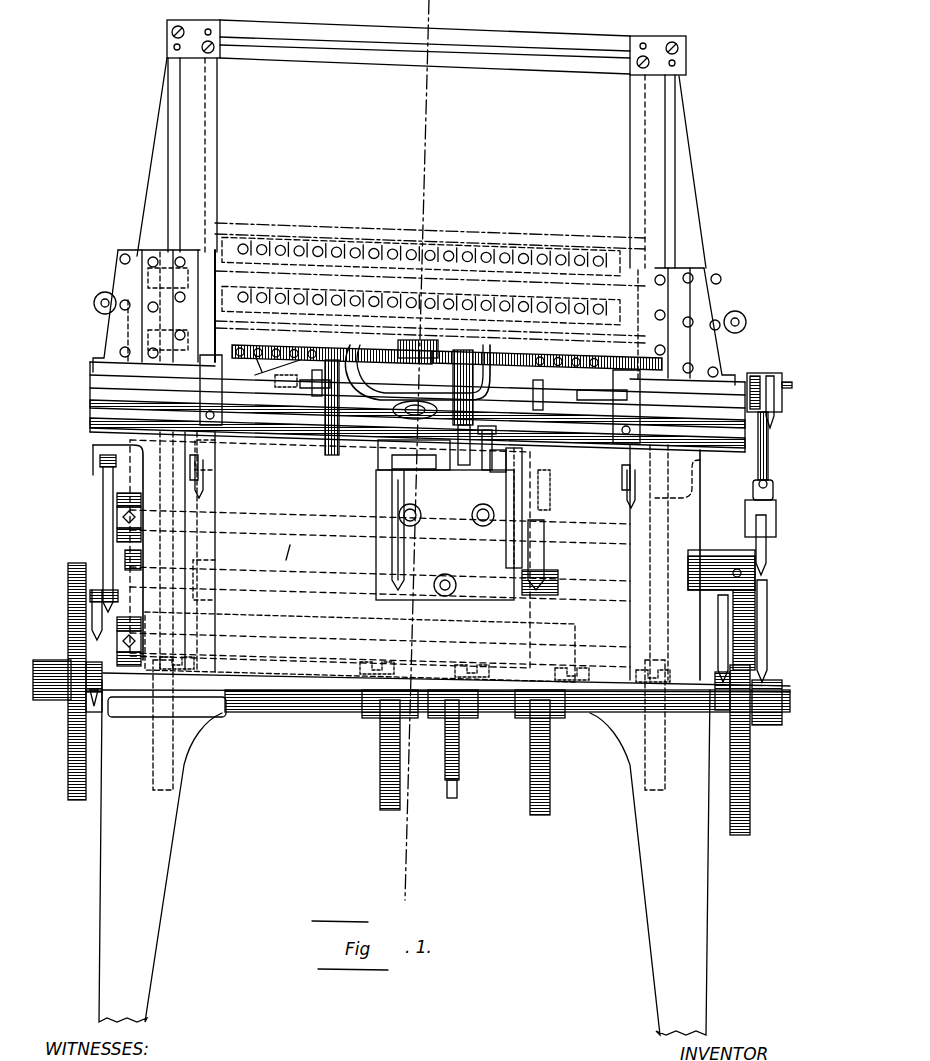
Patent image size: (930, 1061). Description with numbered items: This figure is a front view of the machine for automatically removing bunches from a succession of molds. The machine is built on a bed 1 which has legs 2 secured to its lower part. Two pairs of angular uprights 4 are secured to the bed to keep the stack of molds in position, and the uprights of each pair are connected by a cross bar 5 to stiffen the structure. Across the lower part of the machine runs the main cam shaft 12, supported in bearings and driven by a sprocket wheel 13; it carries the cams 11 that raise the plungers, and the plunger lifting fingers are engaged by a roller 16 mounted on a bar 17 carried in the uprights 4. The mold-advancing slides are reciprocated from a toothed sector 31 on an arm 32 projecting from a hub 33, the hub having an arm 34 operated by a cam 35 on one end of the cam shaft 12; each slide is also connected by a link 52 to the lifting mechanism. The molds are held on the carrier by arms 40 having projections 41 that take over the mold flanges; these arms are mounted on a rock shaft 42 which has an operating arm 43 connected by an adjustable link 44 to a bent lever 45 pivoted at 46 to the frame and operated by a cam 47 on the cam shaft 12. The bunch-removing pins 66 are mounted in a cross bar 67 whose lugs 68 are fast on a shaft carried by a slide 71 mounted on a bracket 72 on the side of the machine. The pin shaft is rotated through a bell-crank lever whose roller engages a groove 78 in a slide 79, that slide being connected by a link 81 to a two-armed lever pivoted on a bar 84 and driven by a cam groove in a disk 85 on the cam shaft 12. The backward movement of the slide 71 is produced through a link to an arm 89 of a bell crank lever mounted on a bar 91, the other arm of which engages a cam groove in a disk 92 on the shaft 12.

The bed 1 is at (288, 554).
The legs 2 is at (401, 733).
The angular uprights 4 is at (197, 163).
The cross bar 5 is at (470, 62).
The cam 11 is at (150, 782).
The main cam shaft 12 is at (335, 712).
The sprocket wheel 13 is at (452, 770).
The roller 16 is at (105, 290).
The bar 17 is at (95, 306).
The toothed sector 31 is at (100, 465).
The arm 32 is at (107, 520).
The hub 33 is at (96, 608).
The arm 34 is at (98, 640).
The cam 35 is at (70, 712).
The arms 40 is at (222, 428).
The projections 41 is at (250, 378).
The rock shaft 42 is at (322, 440).
The operating arm 43 is at (775, 412).
The adjustable link 44 is at (768, 460).
The bent lever 45 is at (765, 548).
The pivot 46 is at (778, 578).
The cam 47 is at (752, 760).
The link 52 is at (208, 482).
The pins 66 is at (278, 348).
The cross bar 67 is at (276, 368).
The lugs 68 is at (470, 356).
The slide 71 is at (378, 458).
The bracket 72 is at (376, 545).
The groove 78 is at (496, 462).
The slide 79 is at (495, 445).
The link 81 is at (530, 566).
The bar 84 is at (278, 530).
The disk 85 is at (550, 770).
The arm of bell crank lever 89 is at (460, 585).
The bar 91 is at (248, 640).
The disk 92 is at (380, 796).